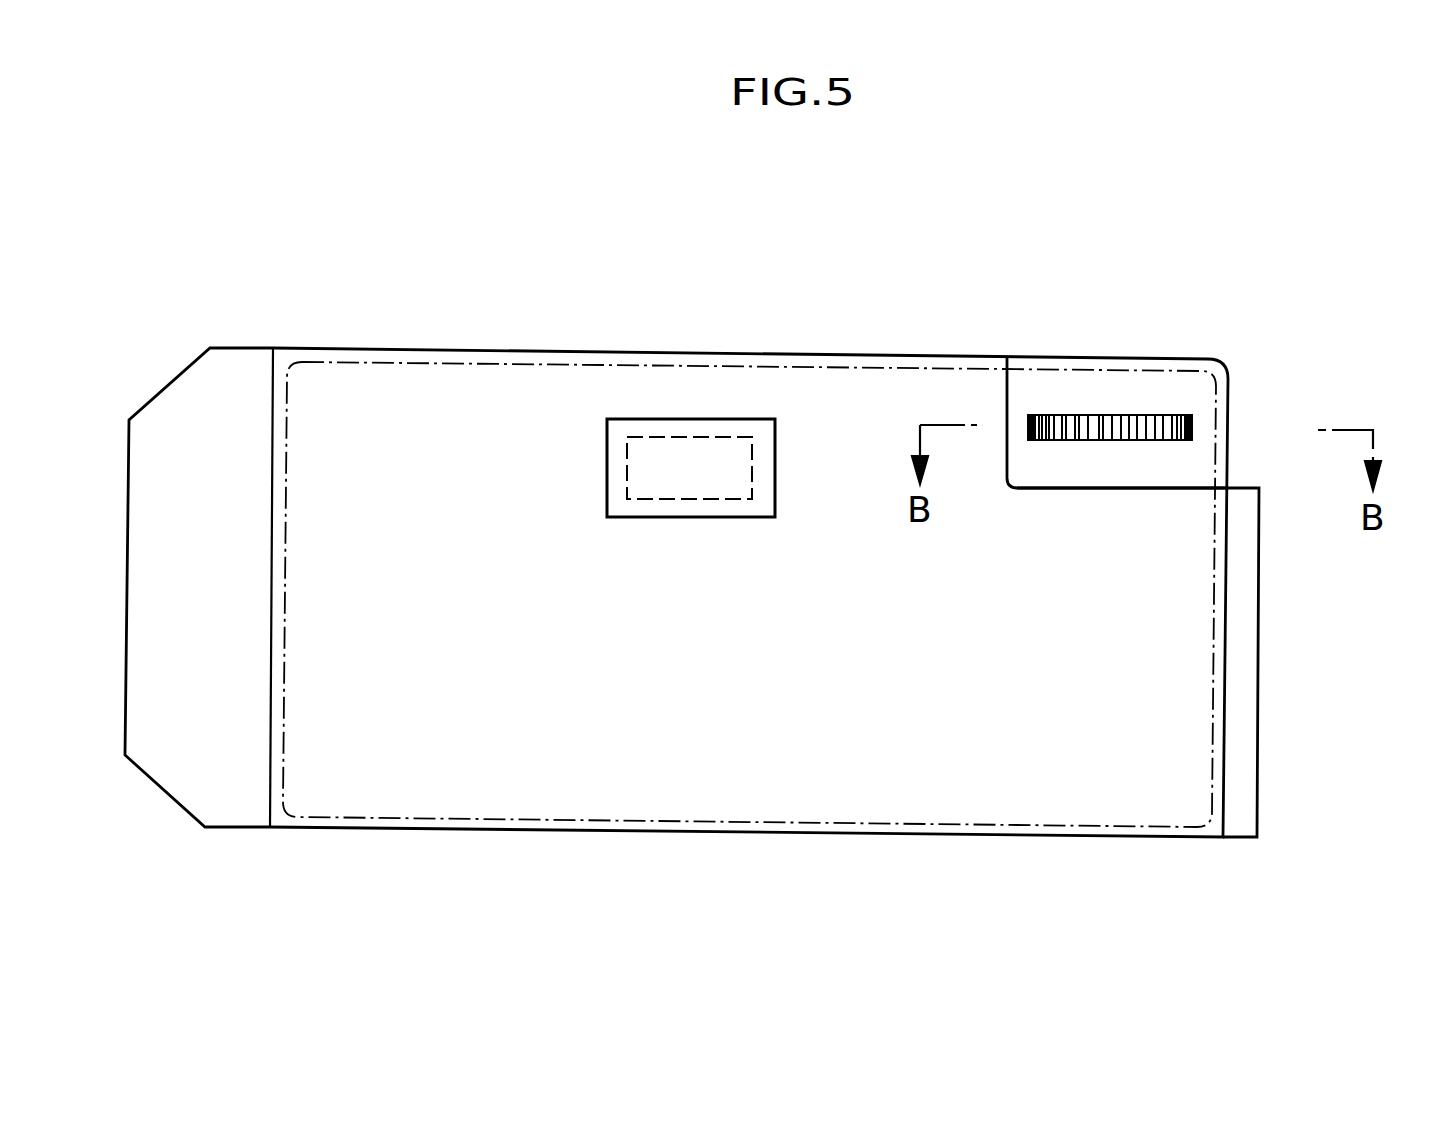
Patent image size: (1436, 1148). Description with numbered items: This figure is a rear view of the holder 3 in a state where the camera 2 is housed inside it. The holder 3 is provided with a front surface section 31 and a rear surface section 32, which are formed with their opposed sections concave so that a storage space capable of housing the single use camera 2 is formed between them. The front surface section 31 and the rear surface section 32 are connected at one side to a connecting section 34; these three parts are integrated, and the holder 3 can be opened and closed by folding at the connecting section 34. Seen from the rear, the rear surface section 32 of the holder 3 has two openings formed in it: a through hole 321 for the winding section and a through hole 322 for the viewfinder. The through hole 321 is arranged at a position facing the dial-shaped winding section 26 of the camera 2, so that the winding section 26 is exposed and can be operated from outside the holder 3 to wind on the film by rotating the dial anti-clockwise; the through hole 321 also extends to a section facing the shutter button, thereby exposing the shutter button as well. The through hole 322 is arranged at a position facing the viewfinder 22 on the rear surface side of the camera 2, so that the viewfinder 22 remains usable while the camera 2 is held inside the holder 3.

The camera 2 is at (544, 365).
The holder 3 is at (676, 568).
The viewfinder 22 is at (627, 460).
The winding section 26 is at (1127, 414).
The front surface section 31 is at (1210, 357).
The rear surface section 32 is at (1037, 763).
The connecting section 34 is at (1259, 738).
The through hole for the winding section 321 is at (1100, 488).
The through hole for the viewfinder 322 is at (677, 516).